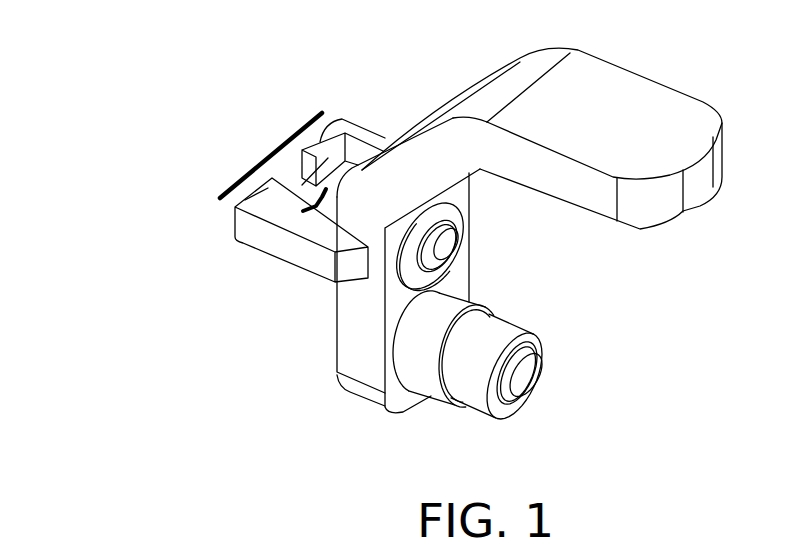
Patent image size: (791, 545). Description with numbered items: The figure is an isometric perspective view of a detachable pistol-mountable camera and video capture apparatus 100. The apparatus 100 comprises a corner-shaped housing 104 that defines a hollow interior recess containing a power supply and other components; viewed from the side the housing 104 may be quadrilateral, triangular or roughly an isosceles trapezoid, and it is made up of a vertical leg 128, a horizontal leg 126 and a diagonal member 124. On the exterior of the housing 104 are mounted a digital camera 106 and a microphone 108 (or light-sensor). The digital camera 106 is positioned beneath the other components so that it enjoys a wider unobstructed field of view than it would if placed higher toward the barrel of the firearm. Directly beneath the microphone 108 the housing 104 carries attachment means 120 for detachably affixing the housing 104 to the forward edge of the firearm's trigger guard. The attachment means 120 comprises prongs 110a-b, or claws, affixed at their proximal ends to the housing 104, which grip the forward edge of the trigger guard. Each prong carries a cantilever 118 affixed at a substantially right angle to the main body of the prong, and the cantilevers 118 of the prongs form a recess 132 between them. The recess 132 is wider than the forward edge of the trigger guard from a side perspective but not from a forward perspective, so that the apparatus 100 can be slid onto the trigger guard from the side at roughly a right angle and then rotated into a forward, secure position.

The camera and video capture apparatus 100 is at (78, 70).
The housing 104 is at (357, 342).
The digital camera 106 is at (527, 375).
The microphone 108 is at (447, 253).
The prongs 110a-b is at (328, 158).
The cantilever 118 is at (235, 207).
The attachment means 120 is at (265, 150).
The diagonal member 124 is at (433, 185).
The horizontal leg 126 is at (645, 144).
The vertical leg 128 is at (382, 327).
The recess 132 is at (306, 212).